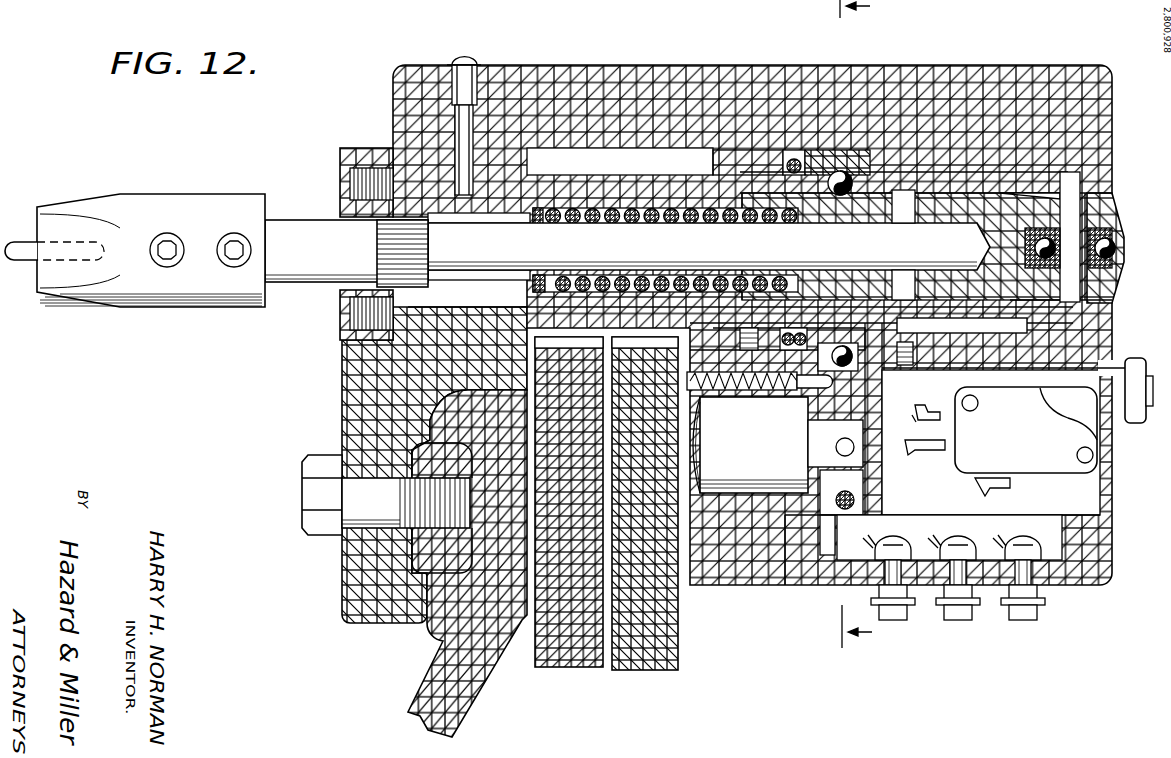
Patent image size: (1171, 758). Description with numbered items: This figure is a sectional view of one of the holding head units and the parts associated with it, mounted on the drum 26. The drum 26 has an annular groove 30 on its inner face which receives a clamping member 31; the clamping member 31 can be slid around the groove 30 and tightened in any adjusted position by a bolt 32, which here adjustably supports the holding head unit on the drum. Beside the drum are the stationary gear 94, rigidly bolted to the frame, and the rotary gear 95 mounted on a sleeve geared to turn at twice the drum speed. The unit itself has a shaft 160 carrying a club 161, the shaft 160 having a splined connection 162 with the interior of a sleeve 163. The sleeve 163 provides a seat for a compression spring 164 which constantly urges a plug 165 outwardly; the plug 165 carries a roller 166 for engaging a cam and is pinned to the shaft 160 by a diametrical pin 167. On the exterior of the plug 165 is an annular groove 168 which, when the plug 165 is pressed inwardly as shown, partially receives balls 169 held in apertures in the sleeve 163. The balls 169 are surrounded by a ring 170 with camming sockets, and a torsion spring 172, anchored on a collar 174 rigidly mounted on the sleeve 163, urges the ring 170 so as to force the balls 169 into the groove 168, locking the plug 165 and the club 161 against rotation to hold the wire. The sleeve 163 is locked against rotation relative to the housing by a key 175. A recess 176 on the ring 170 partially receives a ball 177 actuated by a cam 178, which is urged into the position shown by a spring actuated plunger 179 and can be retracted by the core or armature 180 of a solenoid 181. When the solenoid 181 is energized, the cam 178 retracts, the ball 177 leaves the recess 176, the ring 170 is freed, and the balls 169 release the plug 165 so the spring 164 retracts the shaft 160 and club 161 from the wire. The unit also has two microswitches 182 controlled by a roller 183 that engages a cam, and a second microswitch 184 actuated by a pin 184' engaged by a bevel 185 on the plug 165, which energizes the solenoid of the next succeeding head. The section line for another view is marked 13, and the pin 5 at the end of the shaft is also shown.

The pin 5 is at (22, 245).
The section line 13- 13 is at (865, 326).
The drum 26 is at (447, 682).
The annular groove 30 is at (442, 450).
The clamping member 31 is at (430, 564).
The bolt 32 is at (322, 512).
The stationary gear 94 is at (680, 657).
The rotary gear 95 is at (572, 645).
The shaft 160 is at (308, 262).
The club 161 is at (157, 205).
The splined connection 162 is at (390, 237).
The sleeve 163 is at (548, 192).
The compression spring 164 is at (615, 212).
The plug 165 is at (990, 198).
The roller 166 is at (1126, 250).
The diametrical pin 167 is at (903, 215).
The annular groove 168 is at (833, 292).
The balls 169 is at (843, 180).
The ring 170 is at (838, 150).
The torsion spring 172 is at (788, 160).
The collar 174 is at (712, 163).
The key 175 is at (1003, 333).
The recess 176 is at (818, 354).
The ball 177 is at (841, 367).
The cam 178 is at (853, 396).
The spring actuated plunger 179 is at (818, 350).
The core or armature 180 is at (825, 448).
The solenoid 181 is at (750, 445).
The microswitches 182 is at (1053, 458).
The roller 183 is at (1138, 412).
The second microswitch 184 is at (1001, 441).
The pin 184' is at (1020, 349).
The bevel 185 is at (1100, 186).